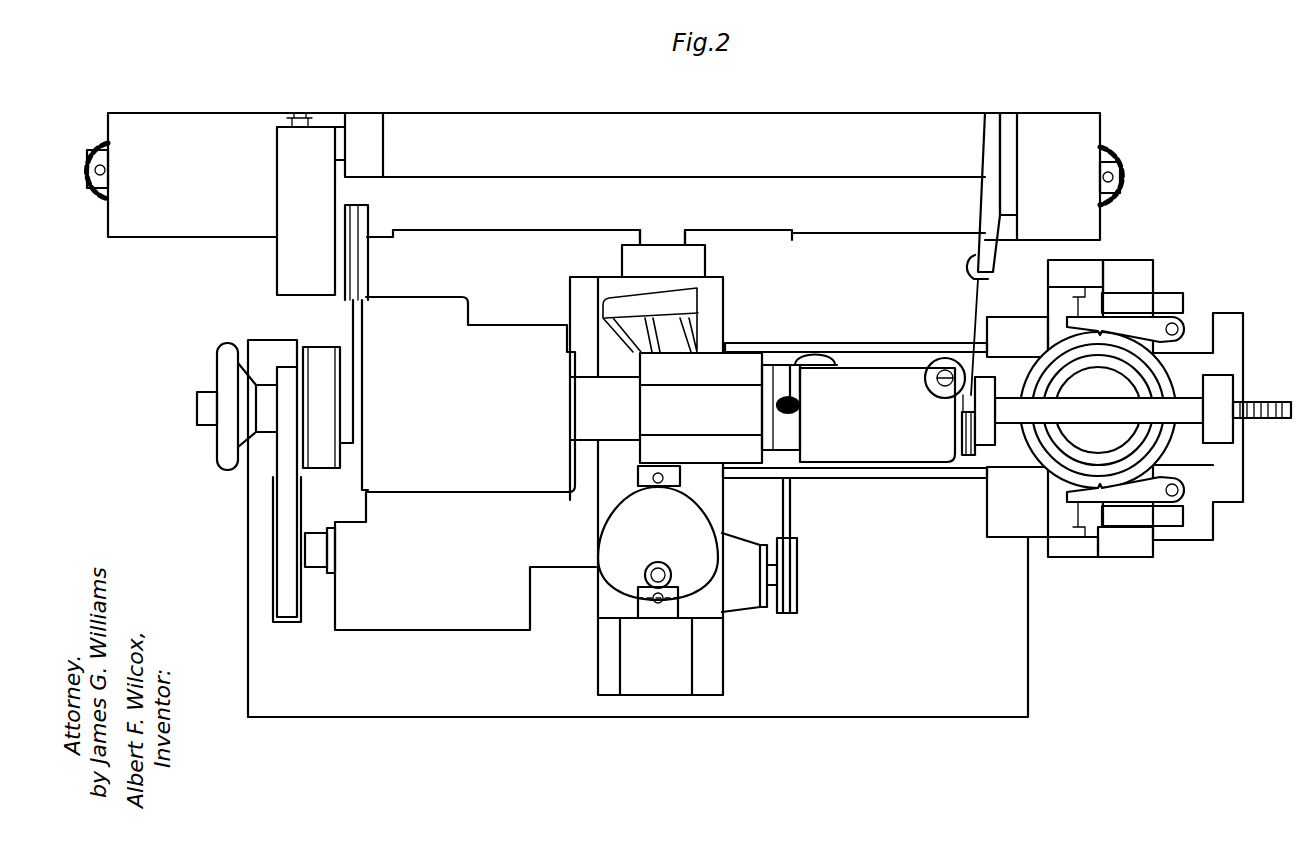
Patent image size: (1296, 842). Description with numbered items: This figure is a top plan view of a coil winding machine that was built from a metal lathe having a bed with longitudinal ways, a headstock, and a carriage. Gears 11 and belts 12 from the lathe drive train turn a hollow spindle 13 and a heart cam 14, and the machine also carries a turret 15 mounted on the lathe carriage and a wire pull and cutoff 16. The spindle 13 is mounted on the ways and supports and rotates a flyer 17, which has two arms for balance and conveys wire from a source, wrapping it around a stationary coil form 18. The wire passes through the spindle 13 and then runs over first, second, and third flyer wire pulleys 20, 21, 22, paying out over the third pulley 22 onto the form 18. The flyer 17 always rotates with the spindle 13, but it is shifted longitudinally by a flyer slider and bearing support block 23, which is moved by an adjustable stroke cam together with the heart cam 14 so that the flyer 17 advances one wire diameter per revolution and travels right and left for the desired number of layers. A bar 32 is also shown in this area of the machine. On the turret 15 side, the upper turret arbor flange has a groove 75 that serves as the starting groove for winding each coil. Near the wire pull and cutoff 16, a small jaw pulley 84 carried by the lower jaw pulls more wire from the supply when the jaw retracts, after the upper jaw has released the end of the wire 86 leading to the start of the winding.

The gears 11 is at (478, 406).
The belts 12 is at (90, 142).
The hollow spindle 13 is at (205, 392).
The heart cam 14 is at (612, 578).
The turret 15 is at (1168, 368).
The wire pull and cutoff 16 is at (982, 224).
The flyer 17 is at (878, 368).
The stationary coil form 18 is at (971, 385).
The first flyer wire pulley 20 is at (810, 358).
The second flyer wire pulley 21 is at (943, 360).
The third flyer wire pulley 22 is at (962, 436).
The flyer slider and bearing support block 23 is at (742, 352).
The bar 32 is at (773, 365).
The groove 75 is at (976, 380).
The jaw pulley 84 is at (970, 258).
The end of the wire 86 is at (977, 295).